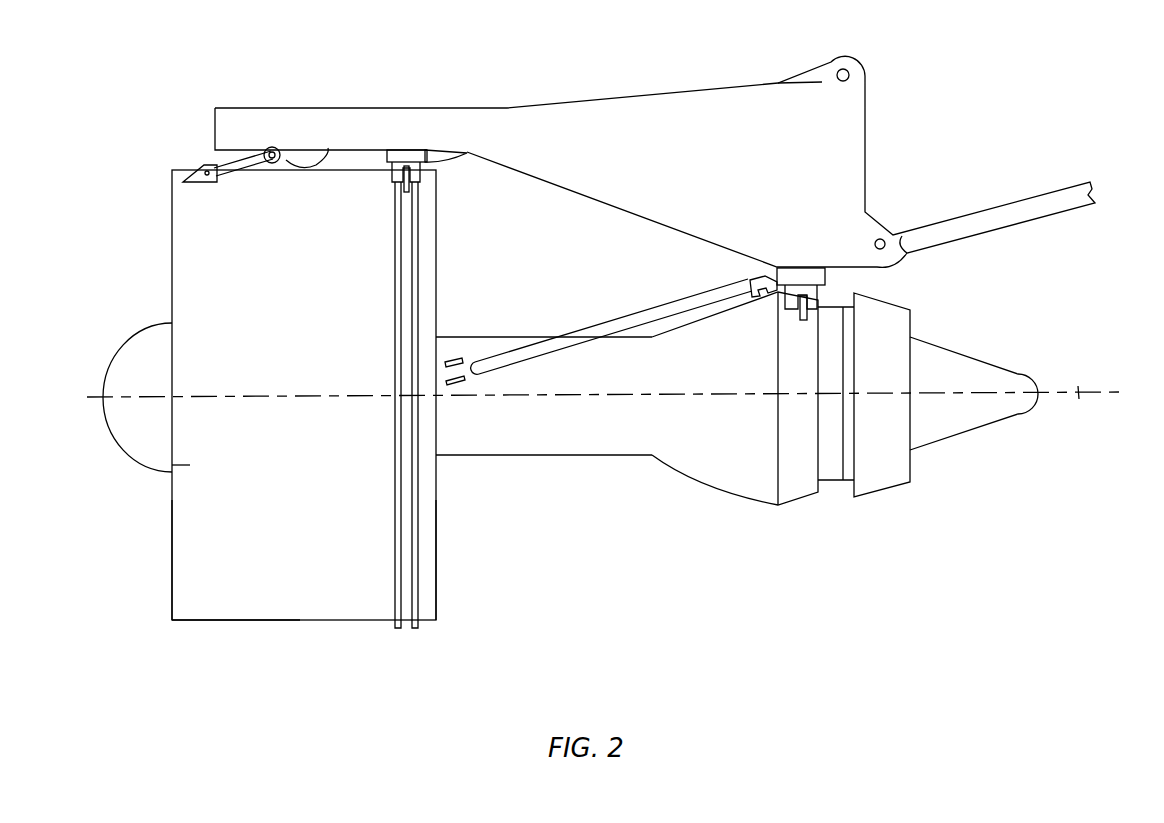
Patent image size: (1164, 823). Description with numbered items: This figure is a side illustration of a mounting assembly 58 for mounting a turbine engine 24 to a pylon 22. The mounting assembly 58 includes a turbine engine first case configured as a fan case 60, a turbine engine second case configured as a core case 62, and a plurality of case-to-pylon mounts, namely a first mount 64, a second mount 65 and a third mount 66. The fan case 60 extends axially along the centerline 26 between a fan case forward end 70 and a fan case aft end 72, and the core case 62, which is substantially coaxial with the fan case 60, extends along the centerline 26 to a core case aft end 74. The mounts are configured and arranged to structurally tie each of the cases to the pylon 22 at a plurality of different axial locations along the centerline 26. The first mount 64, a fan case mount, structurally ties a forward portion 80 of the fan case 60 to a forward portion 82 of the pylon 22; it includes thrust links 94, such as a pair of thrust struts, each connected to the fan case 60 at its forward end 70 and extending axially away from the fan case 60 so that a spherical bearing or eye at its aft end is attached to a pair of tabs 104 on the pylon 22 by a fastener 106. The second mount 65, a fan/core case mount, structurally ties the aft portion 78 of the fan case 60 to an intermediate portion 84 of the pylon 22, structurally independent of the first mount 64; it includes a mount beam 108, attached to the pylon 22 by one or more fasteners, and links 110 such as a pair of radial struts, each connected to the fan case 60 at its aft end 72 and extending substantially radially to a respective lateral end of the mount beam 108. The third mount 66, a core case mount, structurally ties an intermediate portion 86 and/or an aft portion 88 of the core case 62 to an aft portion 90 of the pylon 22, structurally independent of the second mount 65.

The pylon 22 is at (878, 104).
The turbine engine 24 is at (280, 630).
The centerline 26 is at (1080, 420).
The mounting assembly 58 is at (160, 123).
The fan case 60 is at (172, 465).
The core case 62 is at (598, 445).
The first mount 64 is at (242, 188).
The second mount 65 is at (368, 185).
The third mount 66 is at (760, 320).
The fan case forward end 70 is at (170, 586).
The fan case aft end 72 is at (440, 583).
The core case aft end 74 is at (910, 467).
The aft portion of the fan case 78 is at (390, 604).
The forward portion of the fan case 80 is at (203, 604).
The forward portion of the pylon 82 is at (262, 112).
The intermediate portion of the pylon 84 is at (422, 118).
The intermediate portion of the core case 86 is at (478, 445).
The aft portion of the core case 88 is at (790, 488).
The aft portion of the pylon 90 is at (760, 239).
The thrust links 94 is at (247, 167).
The tabs 104 is at (283, 152).
The fastener 106 is at (290, 160).
The mount beam 108 is at (420, 168).
The links 110 is at (398, 195).